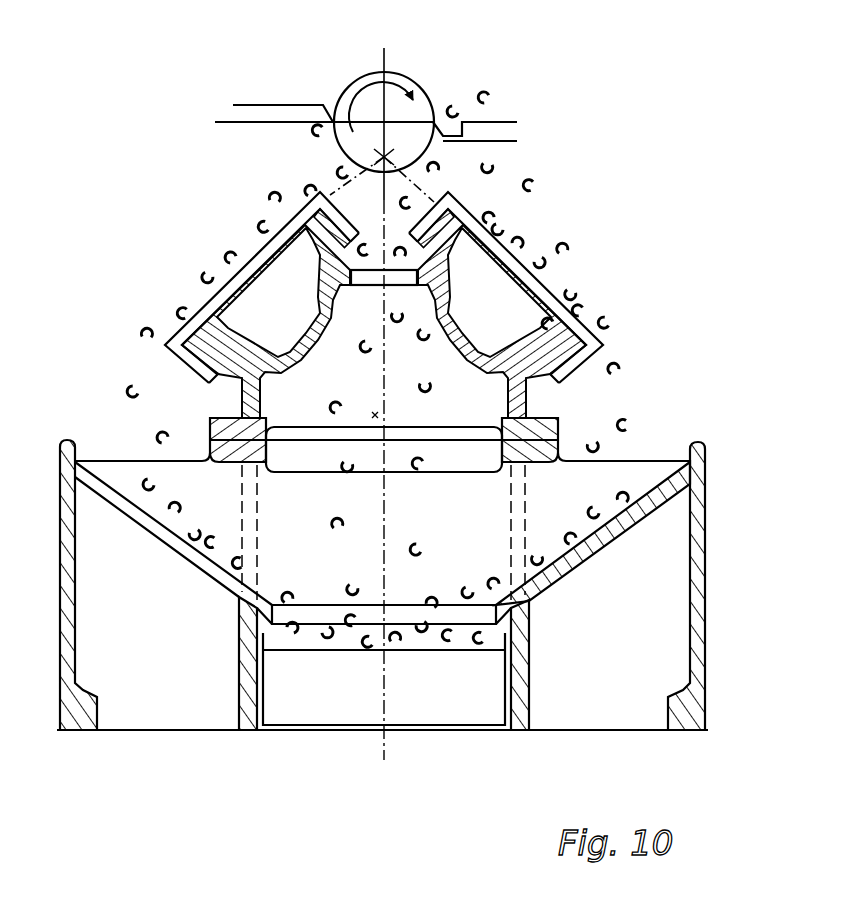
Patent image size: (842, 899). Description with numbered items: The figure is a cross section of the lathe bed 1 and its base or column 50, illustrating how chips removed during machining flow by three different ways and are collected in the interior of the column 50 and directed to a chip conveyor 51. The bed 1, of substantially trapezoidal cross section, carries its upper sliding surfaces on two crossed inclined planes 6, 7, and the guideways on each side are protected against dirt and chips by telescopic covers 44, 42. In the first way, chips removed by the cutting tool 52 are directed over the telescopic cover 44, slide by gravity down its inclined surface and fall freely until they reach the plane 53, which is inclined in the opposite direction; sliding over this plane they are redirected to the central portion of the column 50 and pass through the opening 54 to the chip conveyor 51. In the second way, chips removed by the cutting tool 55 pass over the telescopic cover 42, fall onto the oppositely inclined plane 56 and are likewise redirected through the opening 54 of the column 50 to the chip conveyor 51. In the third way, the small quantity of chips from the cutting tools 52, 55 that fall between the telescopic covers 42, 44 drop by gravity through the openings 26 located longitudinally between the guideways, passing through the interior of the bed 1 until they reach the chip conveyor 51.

The bed 1 is at (562, 413).
The inclined plane 6 is at (333, 193).
The inclined plane 7 is at (416, 181).
The openings 26 is at (363, 288).
The telescopic cover 42 is at (553, 288).
The telescopic cover 44 is at (255, 248).
The column 50 is at (683, 708).
The chip conveyor 51 is at (413, 703).
The cutting tool 52 is at (268, 112).
The plane 53 is at (120, 480).
The opening 54 is at (407, 612).
The cutting tool 55 is at (495, 130).
The plane 56 is at (647, 477).